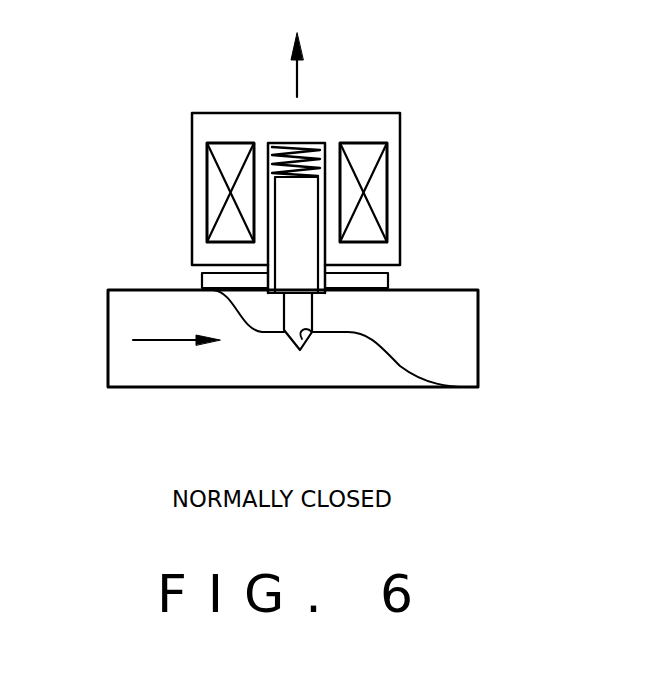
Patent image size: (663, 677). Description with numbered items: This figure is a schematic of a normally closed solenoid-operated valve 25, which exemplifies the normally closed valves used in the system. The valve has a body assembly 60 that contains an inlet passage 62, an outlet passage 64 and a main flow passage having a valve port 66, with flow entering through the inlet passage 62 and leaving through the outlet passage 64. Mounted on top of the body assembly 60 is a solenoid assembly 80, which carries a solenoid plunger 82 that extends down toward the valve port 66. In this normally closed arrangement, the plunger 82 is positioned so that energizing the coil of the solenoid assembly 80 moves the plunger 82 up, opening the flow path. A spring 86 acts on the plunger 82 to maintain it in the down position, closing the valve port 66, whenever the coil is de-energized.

The normally closed solenoid-operated valve 25 is at (292, 240).
The solenoid assembly 80 is at (400, 121).
The spring 86 is at (313, 162).
The solenoid plunger 82 is at (297, 233).
The body assembly 60 is at (143, 387).
The inlet passage 62 is at (108, 342).
The outlet passage 64 is at (478, 330).
The valve port 66 is at (305, 340).